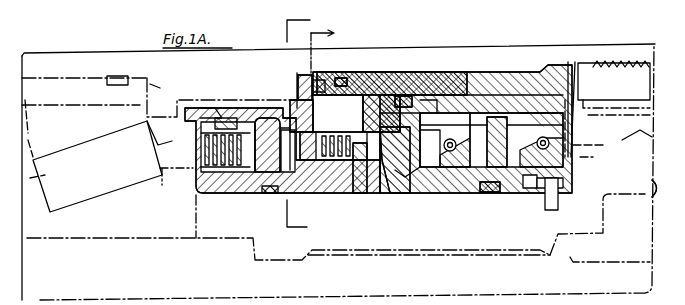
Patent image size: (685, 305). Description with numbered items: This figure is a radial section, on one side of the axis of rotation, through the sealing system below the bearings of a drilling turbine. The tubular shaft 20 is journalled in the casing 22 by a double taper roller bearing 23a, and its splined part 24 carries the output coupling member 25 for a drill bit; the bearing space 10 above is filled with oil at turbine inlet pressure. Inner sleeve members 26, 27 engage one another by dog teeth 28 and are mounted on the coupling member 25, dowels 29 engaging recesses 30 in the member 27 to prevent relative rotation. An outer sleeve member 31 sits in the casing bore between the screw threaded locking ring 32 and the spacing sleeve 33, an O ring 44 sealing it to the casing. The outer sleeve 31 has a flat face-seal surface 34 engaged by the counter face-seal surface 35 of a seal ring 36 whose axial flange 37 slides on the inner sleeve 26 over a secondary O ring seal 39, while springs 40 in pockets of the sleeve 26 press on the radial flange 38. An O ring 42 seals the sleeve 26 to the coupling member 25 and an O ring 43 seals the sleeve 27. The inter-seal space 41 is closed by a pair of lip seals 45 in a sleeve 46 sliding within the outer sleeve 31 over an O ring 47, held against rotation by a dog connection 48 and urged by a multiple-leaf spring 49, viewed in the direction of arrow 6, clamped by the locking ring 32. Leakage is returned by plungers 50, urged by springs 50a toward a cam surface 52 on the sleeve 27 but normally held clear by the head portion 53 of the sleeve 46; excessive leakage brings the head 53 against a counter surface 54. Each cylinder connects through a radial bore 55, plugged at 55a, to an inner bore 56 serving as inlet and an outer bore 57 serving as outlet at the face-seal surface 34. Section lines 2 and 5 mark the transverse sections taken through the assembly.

The bearing space 10 is at (32, 155).
The tubular shaft 20 is at (97, 260).
The casing 22 is at (90, 68).
The spacing sleeve 33 is at (155, 85).
The double taper roller bearing 23a is at (102, 178).
The splined part 24 is at (383, 251).
The output coupling member 25 is at (650, 203).
The section line 2— 2 is at (297, 126).
The section line 5— 5 is at (328, 50).
The inner sleeve member 26 is at (210, 193).
The springs 40 is at (202, 153).
The secondary O ring seal 39 is at (228, 122).
The axial flange 37 is at (236, 118).
The counter face-seal surface 35 is at (265, 118).
The seal ring 36 is at (276, 116).
The inner bore 56 is at (285, 151).
The O ring 42 is at (268, 193).
The radial flange 38 is at (286, 165).
The outer bore 57 is at (297, 108).
The face-seal surface 34 is at (313, 117).
The inter-seal space 41 is at (322, 162).
The plungers 50 is at (350, 196).
The dog teeth 28 is at (365, 194).
The outer sleeve member 31 is at (470, 83).
The O ring 44 is at (360, 83).
The radial bore 55 is at (320, 82).
The plug 55a is at (315, 73).
The sleeve 46 is at (471, 86).
The lip seals 45 is at (471, 133).
The O ring 47 is at (437, 103).
The head portion 53 is at (395, 92).
The springs 50a is at (381, 75).
The cam surface 52 is at (390, 182).
The inner sleeve member 27 is at (405, 178).
The counter surface 54 is at (425, 167).
The O ring 43 is at (490, 192).
The recesses 30 is at (563, 182).
The dowels 29 is at (553, 200).
The dog connection 48 is at (563, 95).
The multiple-leaf spring 49 is at (566, 127).
The arrow 6 is at (631, 139).
The screw threaded locking ring 32 is at (615, 91).